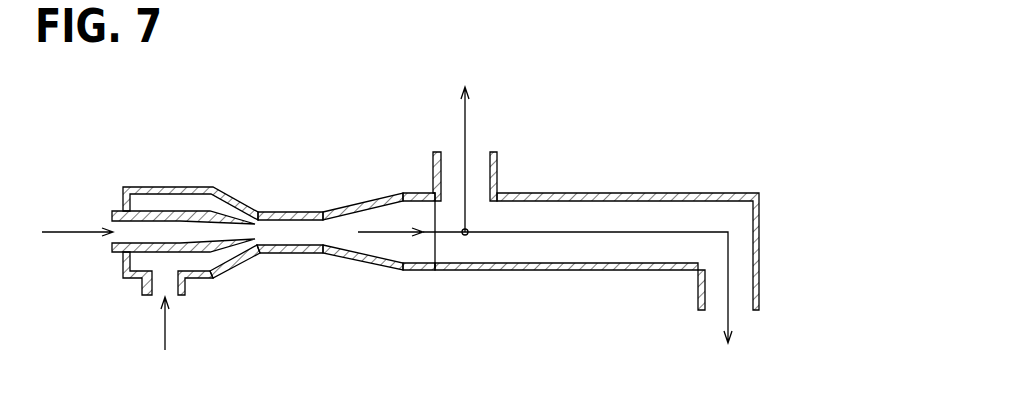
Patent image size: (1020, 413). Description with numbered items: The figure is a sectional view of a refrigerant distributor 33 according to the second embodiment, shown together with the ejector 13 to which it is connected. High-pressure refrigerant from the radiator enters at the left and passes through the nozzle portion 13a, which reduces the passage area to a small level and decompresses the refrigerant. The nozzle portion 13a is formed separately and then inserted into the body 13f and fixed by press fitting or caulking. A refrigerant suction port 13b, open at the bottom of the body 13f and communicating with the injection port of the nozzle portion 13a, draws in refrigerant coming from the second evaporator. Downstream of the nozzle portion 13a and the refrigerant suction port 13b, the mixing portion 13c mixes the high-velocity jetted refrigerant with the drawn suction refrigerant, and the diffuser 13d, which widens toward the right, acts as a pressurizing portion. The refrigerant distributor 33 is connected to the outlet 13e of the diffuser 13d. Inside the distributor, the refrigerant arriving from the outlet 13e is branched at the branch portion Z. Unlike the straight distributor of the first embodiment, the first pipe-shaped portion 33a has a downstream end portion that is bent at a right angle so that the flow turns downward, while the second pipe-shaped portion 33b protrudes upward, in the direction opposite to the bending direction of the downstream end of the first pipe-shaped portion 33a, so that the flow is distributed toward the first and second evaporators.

The ejector 13 is at (321, 205).
The nozzle portion 13a is at (203, 213).
The refrigerant suction port 13b is at (158, 295).
The mixing portion 13c is at (287, 230).
The diffuser 13d is at (388, 243).
The outlet 13e is at (435, 240).
The body 13f is at (383, 198).
The refrigerant distributor 33 is at (651, 177).
The first pipe-shaped portion 33a is at (603, 250).
The second pipe-shaped portion 33b is at (480, 183).
The branch portion Z is at (467, 237).